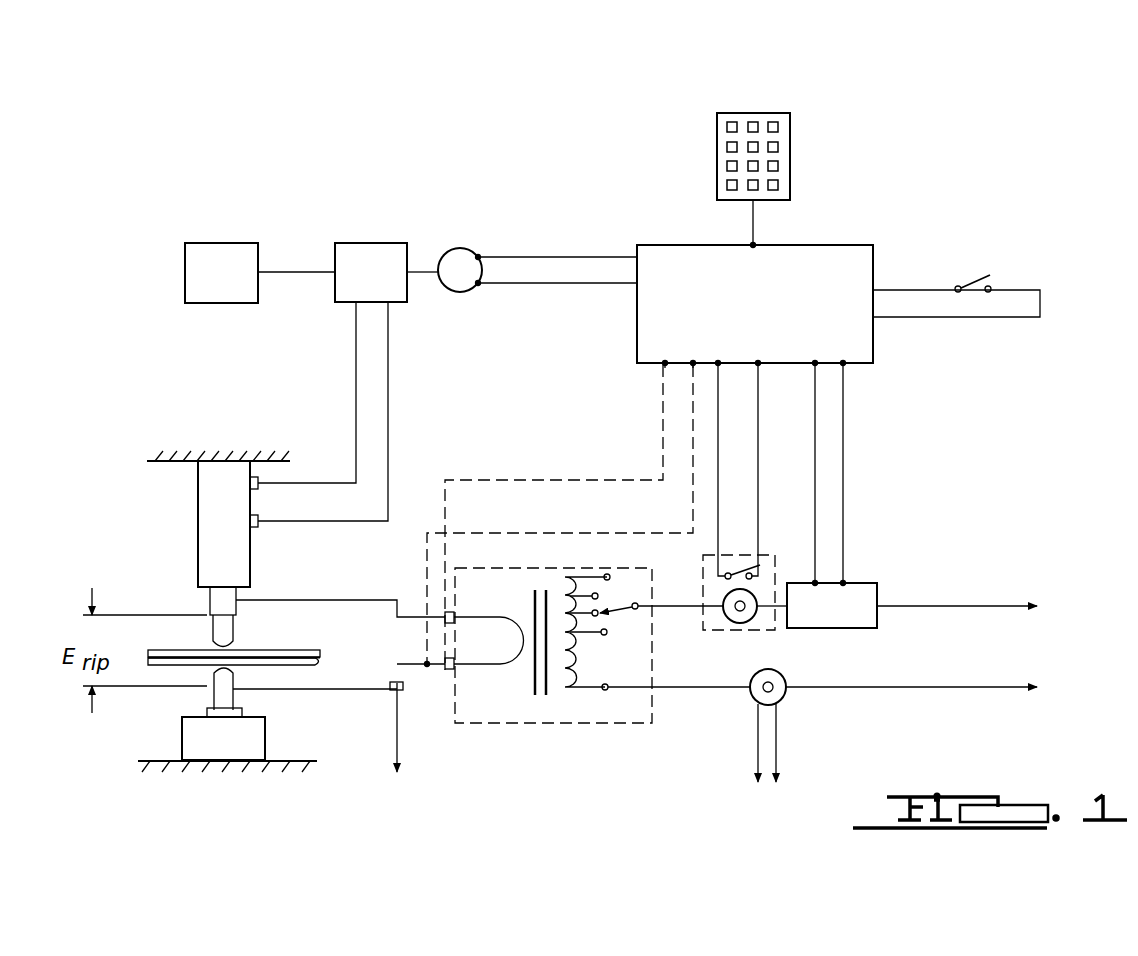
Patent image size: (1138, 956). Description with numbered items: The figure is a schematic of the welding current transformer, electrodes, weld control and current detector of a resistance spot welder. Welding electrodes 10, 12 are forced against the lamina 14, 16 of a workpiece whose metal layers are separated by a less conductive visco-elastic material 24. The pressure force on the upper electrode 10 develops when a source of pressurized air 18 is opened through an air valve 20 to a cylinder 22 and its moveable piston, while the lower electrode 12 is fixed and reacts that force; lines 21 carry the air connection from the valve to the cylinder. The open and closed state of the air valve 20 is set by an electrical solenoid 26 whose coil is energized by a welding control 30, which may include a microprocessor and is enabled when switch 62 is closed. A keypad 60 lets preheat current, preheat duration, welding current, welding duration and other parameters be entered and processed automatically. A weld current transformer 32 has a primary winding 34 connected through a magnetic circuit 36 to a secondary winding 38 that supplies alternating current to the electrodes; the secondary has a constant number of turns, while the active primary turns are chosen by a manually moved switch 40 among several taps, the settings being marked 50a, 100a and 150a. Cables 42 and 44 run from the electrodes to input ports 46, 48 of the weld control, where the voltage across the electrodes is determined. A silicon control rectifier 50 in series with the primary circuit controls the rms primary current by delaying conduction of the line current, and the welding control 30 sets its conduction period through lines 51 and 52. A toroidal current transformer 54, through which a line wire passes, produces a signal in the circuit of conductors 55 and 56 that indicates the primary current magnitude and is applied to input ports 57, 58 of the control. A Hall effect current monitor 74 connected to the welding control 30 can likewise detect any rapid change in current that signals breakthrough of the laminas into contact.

The upper welding electrode 10 is at (232, 631).
The lower welding electrode 12 is at (232, 681).
The lamina 14 is at (317, 650).
The lamina 16 is at (310, 665).
The source of pressurized air 18 is at (202, 242).
The air valve 20 is at (358, 242).
The control lines to cylinder 21 is at (388, 373).
The cylinder 22 is at (207, 519).
The visco-elastic material 24 is at (320, 656).
The electrical solenoid 26 is at (461, 255).
The welding control 30 is at (857, 250).
The weld current transformer 32 is at (577, 656).
The primary winding 34 is at (577, 576).
The magnetic circuit 36 is at (535, 590).
The secondary winding 38 is at (516, 617).
The switch 40 is at (635, 602).
The cable 42 is at (482, 479).
The control line 44 is at (480, 532).
The control output terminal 46 is at (664, 366).
The control output terminal 48 is at (691, 366).
The silicon control rectifier 50 is at (877, 592).
The current setting 50a is at (895, 489).
The line 51 is at (815, 412).
The line 52 is at (843, 437).
The current transformer 54 is at (735, 620).
The conductor 55 is at (717, 498).
The conductor 56 is at (759, 492).
The input port 57 is at (719, 366).
The input port 58 is at (759, 366).
The keypad 60 is at (790, 133).
The switch 62 is at (971, 284).
The Hall effect current monitor 74 is at (395, 697).
The current setting 100a is at (892, 509).
The current setting 150a is at (760, 548).